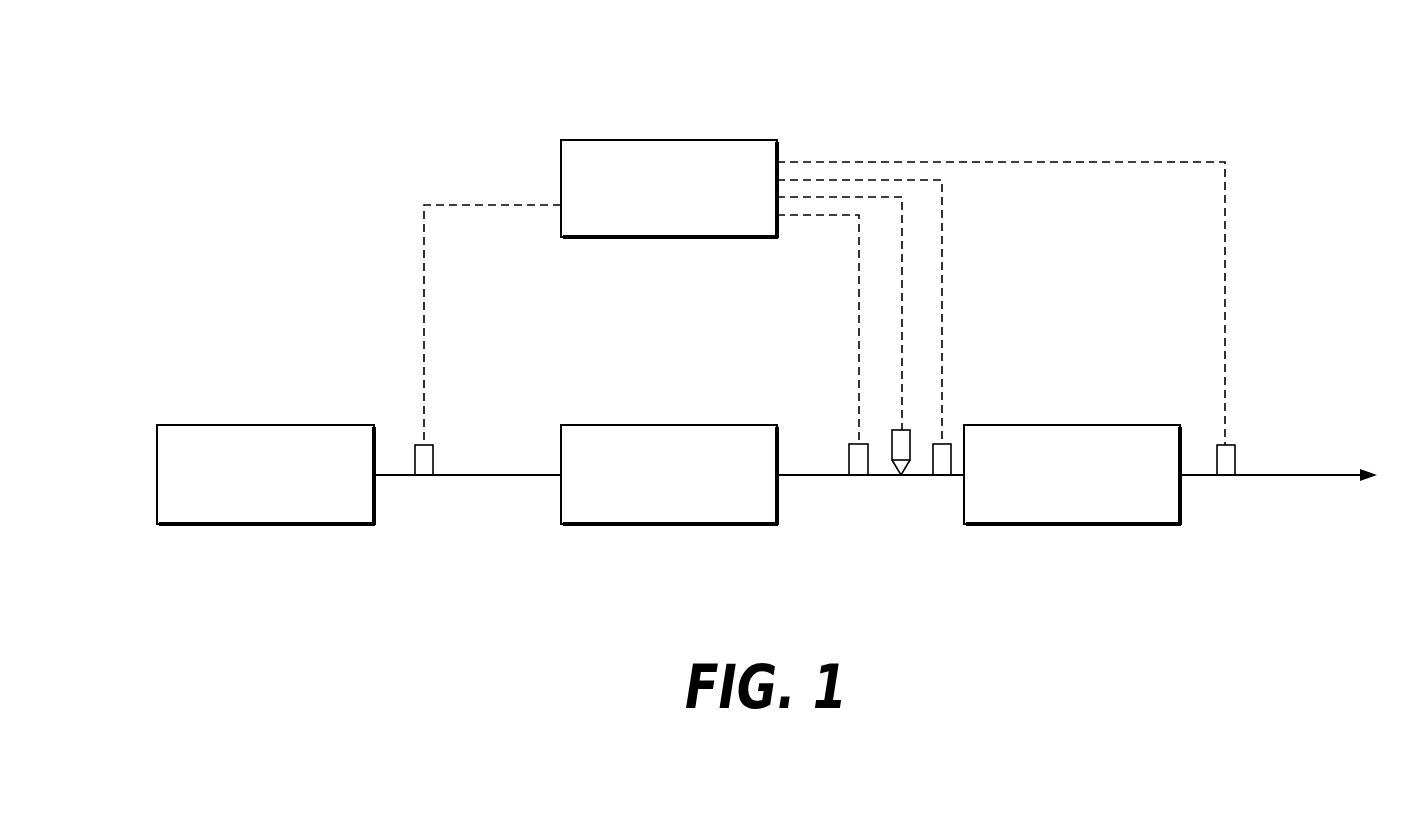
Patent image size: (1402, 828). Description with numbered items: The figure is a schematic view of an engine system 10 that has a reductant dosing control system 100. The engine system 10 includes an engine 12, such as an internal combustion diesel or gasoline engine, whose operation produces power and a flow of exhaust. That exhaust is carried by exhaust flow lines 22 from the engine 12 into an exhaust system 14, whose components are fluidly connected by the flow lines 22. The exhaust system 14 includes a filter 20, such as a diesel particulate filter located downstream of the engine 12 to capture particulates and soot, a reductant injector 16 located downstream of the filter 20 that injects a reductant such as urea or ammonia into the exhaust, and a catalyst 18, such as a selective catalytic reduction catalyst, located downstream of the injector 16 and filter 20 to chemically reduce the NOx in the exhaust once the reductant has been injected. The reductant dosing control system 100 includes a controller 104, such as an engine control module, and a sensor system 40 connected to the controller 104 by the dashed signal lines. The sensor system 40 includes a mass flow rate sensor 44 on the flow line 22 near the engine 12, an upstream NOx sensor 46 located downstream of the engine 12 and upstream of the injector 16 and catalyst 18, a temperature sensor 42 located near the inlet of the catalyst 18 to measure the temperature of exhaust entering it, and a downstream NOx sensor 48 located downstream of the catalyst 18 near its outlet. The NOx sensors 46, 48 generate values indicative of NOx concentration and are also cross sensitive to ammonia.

The engine system 10 is at (256, 94).
The engine 12 is at (250, 524).
The exhaust system 14 is at (1214, 555).
The reductant injector 16 is at (902, 430).
The catalyst 18 is at (1067, 524).
The filter 20 is at (664, 524).
The exhaust flow lines 22 is at (470, 477).
The sensor system 40 is at (1290, 373).
The temperature sensor 42 is at (943, 444).
The mass flow rate sensor 44 is at (433, 456).
The upstream NOx sensor 46 is at (853, 444).
The downstream NOx sensor 48 is at (1235, 456).
The reductant dosing control system 100 is at (468, 160).
The controller 104 is at (660, 237).